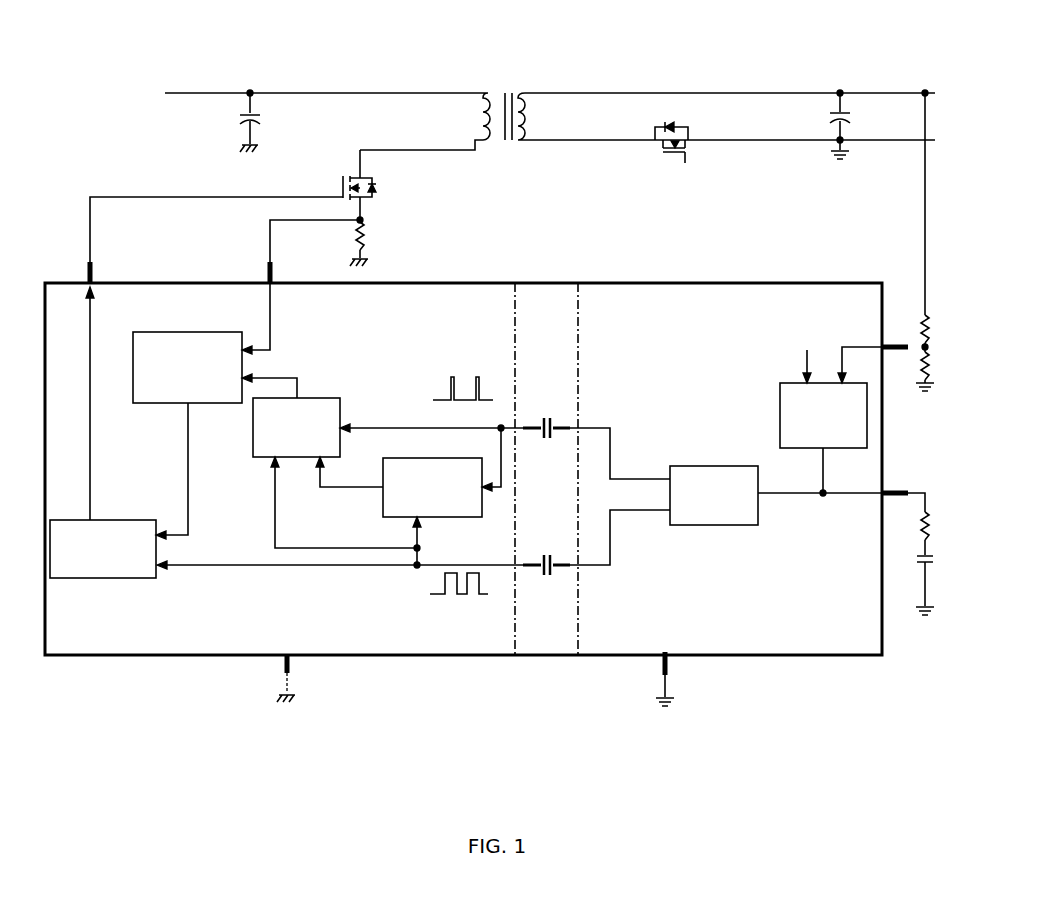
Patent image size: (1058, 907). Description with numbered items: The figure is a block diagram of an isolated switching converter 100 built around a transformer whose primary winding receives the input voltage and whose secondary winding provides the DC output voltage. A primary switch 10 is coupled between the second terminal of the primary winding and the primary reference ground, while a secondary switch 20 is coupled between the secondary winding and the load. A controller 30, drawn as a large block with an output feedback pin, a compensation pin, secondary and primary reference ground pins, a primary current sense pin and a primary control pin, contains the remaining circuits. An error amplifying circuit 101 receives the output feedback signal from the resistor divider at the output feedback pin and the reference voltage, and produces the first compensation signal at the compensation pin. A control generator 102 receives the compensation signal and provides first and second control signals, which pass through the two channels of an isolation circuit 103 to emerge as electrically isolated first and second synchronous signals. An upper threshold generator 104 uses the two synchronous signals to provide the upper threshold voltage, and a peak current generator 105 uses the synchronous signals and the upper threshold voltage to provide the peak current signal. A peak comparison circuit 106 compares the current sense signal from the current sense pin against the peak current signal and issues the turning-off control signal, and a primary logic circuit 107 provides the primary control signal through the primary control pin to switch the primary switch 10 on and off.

The isolated switching converter 100 is at (615, 45).
The primary switch 10 is at (339, 173).
The secondary switch 20 is at (658, 150).
The controller 30 is at (636, 282).
The error amplifying circuit 101 is at (780, 408).
The control generator 102 is at (712, 526).
The isolation circuit 103 is at (513, 607).
The upper threshold generator 104 is at (401, 519).
The peak current generator 105 is at (259, 459).
The peak comparison circuit 106 is at (160, 399).
The primary logic circuit 107 is at (92, 580).